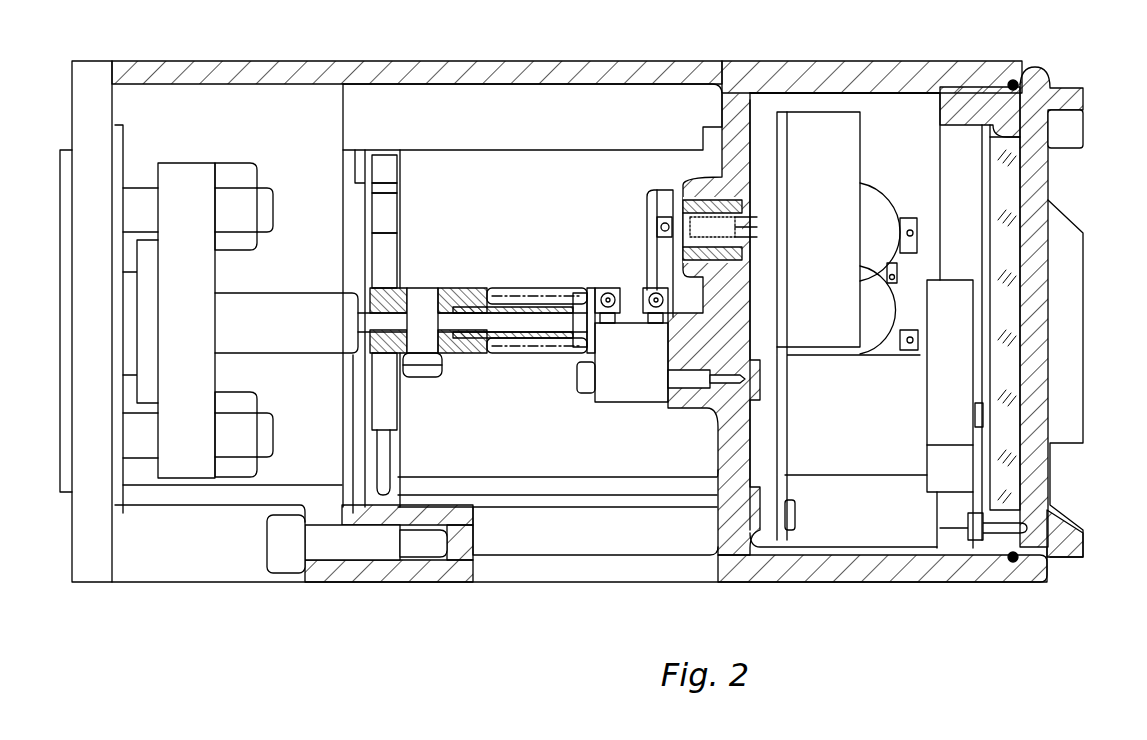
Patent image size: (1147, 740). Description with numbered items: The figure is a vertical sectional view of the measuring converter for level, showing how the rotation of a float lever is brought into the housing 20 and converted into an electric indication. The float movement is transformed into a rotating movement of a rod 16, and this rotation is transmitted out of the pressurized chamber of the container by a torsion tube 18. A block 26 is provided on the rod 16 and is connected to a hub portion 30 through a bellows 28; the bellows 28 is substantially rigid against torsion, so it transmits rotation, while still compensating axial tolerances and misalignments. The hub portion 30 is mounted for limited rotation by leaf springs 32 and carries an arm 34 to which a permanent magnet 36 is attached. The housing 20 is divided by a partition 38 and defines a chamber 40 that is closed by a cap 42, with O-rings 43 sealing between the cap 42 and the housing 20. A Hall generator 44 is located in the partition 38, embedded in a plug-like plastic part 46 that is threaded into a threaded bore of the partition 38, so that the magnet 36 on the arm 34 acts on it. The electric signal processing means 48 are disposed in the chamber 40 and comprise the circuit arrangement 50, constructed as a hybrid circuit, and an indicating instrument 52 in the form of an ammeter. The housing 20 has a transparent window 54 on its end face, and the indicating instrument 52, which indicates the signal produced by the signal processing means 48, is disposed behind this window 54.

The rod 16 is at (512, 322).
The torsion tube 18 is at (277, 296).
The housing 20 is at (575, 62).
The block 26 is at (478, 288).
The bellows 28 is at (537, 288).
The hub portion 30 is at (598, 290).
The leaf springs 32 is at (650, 290).
The arm 34 is at (640, 203).
The permanent magnet 36 is at (664, 222).
The partition 38 is at (718, 437).
The chamber 40 is at (888, 147).
The cap 42 is at (930, 161).
The O-rings 43 is at (1015, 563).
The Hall generator 44 is at (755, 205).
The plug-like plastic part 46 is at (408, 290).
The electric signal processing means 48 is at (1020, 88).
The circuit arrangement 50 is at (852, 326).
The indicating instrument 52 is at (947, 402).
The transparent window 54 is at (1025, 397).